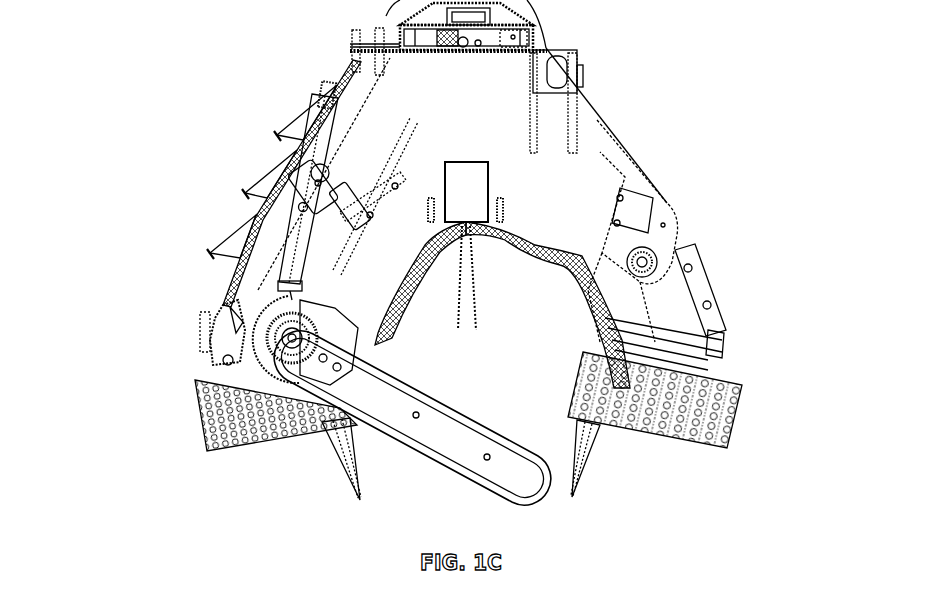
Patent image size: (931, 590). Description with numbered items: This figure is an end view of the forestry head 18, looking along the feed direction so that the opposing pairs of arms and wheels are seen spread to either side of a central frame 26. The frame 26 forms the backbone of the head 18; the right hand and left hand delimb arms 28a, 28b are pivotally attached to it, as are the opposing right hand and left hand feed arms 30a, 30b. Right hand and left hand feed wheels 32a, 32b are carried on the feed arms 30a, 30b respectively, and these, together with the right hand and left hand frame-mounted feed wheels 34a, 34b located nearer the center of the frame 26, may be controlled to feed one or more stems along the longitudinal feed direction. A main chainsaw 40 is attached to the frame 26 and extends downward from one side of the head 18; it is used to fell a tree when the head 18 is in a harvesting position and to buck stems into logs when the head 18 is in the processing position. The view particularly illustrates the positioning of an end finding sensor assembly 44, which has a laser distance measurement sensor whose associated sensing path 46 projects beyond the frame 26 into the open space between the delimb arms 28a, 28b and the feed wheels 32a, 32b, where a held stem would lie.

The head 18 is at (112, 59).
The frame 26 is at (600, 90).
The RH delimb arm 28a is at (592, 461).
The LH delimb arm 28b is at (318, 458).
The RH feed arm 30a is at (705, 283).
The LH feed arm 30b is at (213, 318).
The RH feed wheel 32a is at (736, 426).
The LH feed wheel 32b is at (196, 397).
The RH frame-mounted feed wheel 34a is at (532, 252).
The LH frame-mounted feed wheel 34b is at (383, 266).
The main chainsaw 40 is at (450, 470).
The end finding sensor assembly 44 is at (455, 162).
The sensing path 46 is at (476, 292).